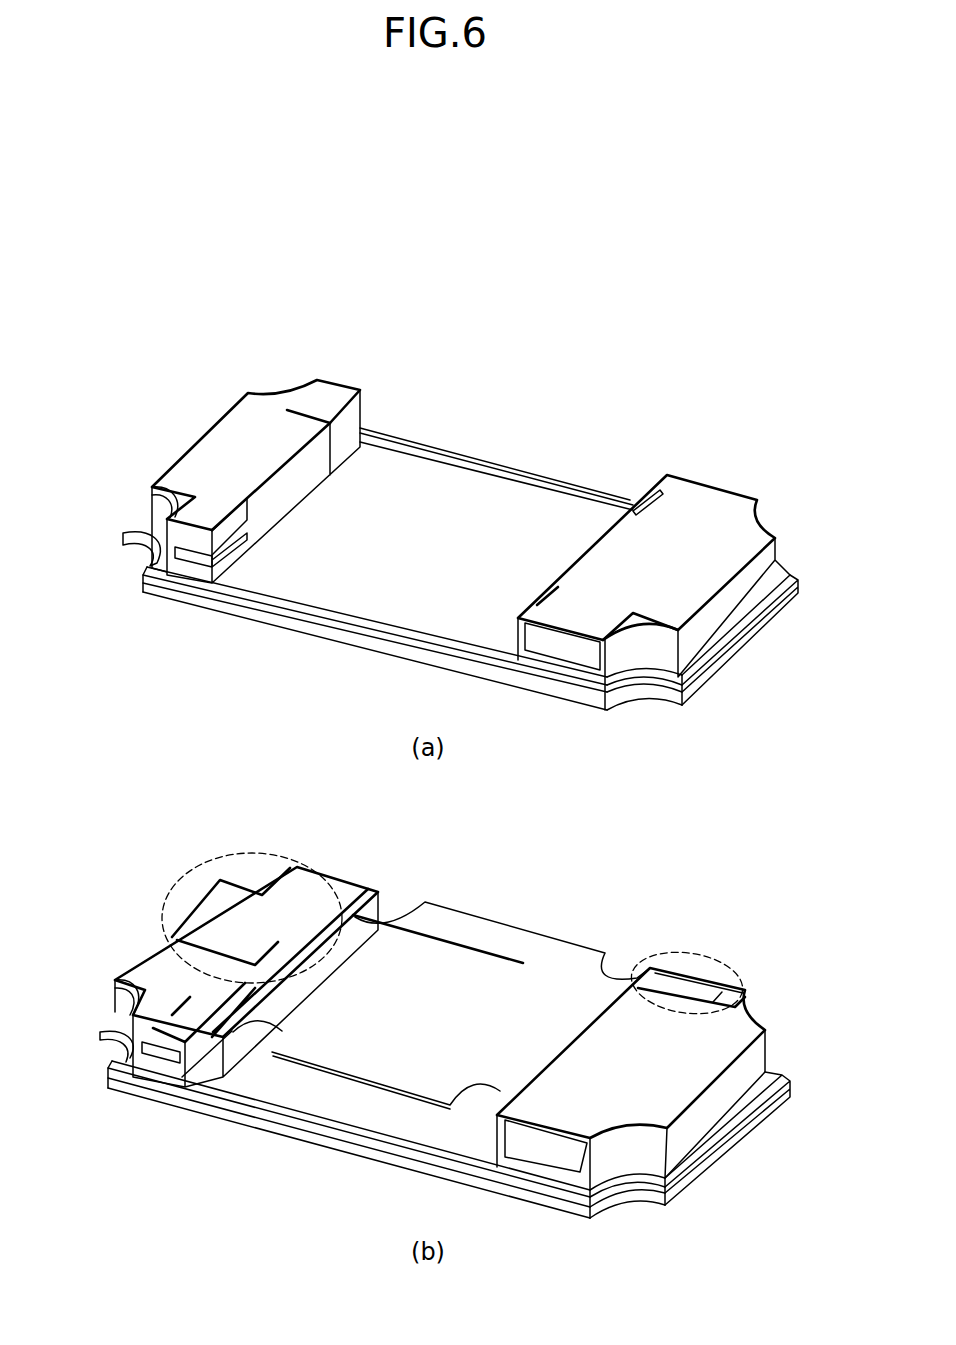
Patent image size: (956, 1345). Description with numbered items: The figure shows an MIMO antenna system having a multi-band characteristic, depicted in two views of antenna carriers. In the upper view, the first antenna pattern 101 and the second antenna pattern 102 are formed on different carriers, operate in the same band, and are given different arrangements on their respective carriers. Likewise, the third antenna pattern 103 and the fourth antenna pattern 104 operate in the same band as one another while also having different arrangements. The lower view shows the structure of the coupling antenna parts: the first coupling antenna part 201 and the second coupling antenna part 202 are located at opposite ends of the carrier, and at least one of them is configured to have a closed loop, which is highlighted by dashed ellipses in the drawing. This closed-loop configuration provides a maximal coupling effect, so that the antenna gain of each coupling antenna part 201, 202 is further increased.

The first antenna pattern 101 is at (300, 413).
The second antenna pattern 102 is at (647, 492).
The third antenna pattern 103 is at (188, 530).
The fourth antenna pattern 104 is at (605, 657).
The first coupling antenna part 201 is at (187, 1000).
The second coupling antenna part 202 is at (535, 1083).